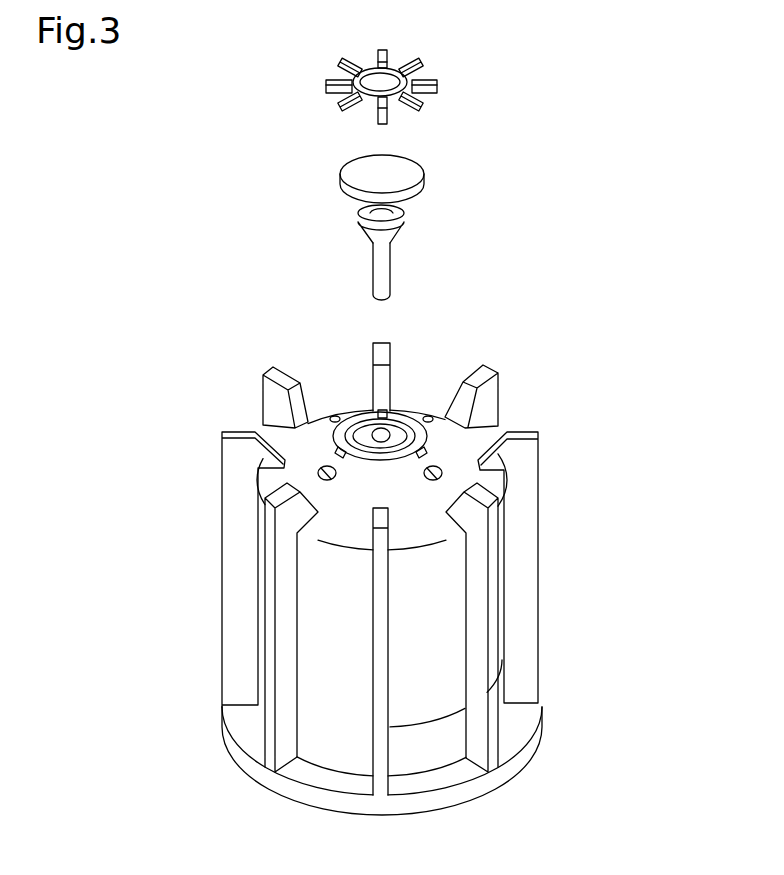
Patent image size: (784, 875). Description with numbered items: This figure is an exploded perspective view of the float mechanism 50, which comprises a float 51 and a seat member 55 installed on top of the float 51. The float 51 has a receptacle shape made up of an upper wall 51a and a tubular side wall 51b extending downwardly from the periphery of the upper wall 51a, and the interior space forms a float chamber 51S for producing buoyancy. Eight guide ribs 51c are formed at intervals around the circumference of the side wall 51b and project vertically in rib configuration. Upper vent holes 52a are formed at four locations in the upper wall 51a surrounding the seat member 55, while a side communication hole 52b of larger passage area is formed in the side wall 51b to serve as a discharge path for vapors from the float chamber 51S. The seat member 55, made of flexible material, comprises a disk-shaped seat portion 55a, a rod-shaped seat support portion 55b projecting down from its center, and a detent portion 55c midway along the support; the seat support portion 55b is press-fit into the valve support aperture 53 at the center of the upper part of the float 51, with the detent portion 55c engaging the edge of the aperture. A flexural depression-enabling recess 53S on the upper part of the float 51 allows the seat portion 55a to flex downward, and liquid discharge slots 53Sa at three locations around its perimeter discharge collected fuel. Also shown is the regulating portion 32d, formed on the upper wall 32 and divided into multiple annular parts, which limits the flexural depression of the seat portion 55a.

The regulating portion 32d is at (438, 87).
The upper wall 32 is at (418, 109).
The float mechanism 50 is at (665, 170).
The float 51 is at (402, 569).
The upper wall 51a is at (473, 447).
The side wall 51b is at (500, 522).
The guide ribs 51c is at (228, 527).
The float chamber 51S is at (435, 740).
The upper vent holes 52a is at (322, 470).
The side communication hole 52b is at (440, 733).
The valve support aperture 53 is at (380, 437).
The flexural depression-enabling recess 53S is at (400, 420).
The liquid discharge slots 53Sa is at (430, 420).
The seat member 55 is at (447, 227).
The seat portion 55a is at (420, 190).
The seat support portion 55b is at (438, 271).
The detent portion 55c is at (398, 230).